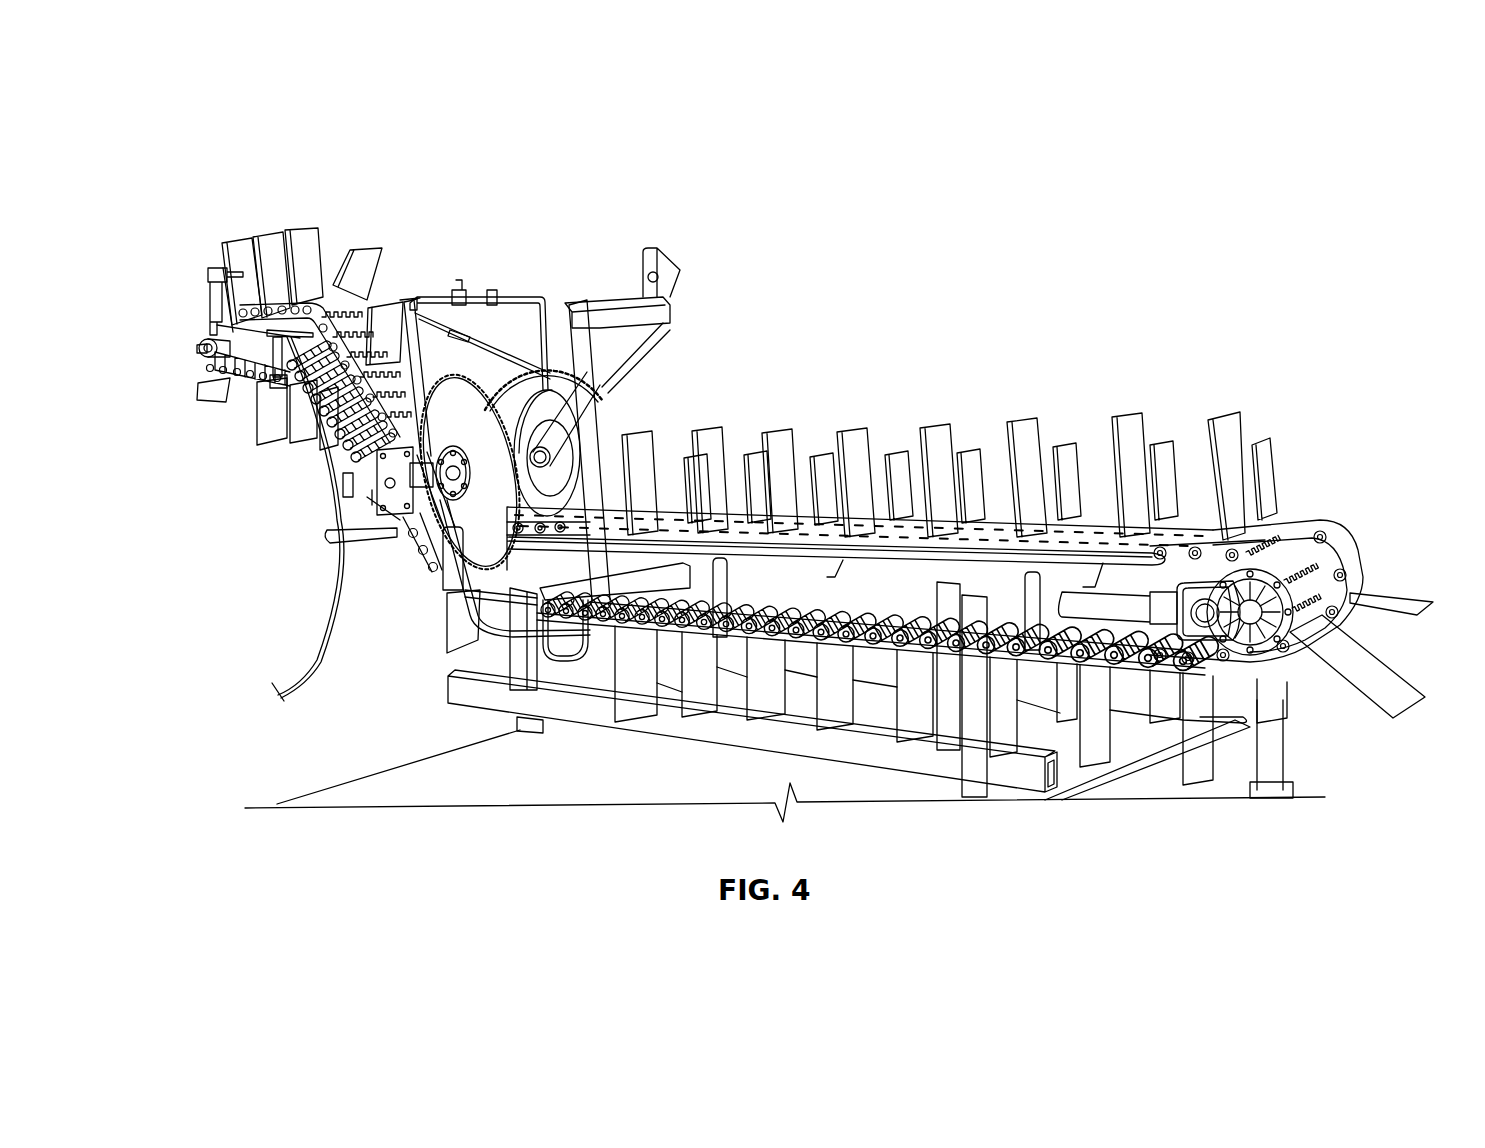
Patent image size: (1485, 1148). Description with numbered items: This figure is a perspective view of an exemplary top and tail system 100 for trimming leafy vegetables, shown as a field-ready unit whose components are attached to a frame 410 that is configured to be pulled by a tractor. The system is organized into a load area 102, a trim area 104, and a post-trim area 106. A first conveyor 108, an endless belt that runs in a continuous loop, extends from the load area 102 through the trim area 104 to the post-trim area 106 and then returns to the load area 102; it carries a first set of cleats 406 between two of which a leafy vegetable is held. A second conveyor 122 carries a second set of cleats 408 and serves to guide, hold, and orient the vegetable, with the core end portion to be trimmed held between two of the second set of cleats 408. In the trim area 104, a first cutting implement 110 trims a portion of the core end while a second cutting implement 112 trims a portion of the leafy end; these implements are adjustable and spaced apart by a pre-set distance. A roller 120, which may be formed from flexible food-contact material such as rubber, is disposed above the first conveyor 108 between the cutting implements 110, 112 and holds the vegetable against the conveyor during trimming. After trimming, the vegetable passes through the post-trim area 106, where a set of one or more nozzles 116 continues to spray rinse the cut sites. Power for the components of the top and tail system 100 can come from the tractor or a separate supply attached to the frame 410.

The top and tail system 100 is at (212, 145).
The load area 102 is at (1115, 388).
The trim area 104 is at (540, 266).
The post-trim area 106 is at (268, 458).
The first conveyor 108 is at (1348, 597).
The first cutting implement 110 is at (523, 358).
The second cutting implement 112 is at (460, 306).
The set of one or more nozzles 116 is at (205, 278).
The roller 120 is at (552, 388).
The second conveyor 122 is at (1313, 527).
The first set of cleats 406 is at (1394, 697).
The second set of cleats 408 is at (1400, 600).
The frame 410 is at (477, 697).